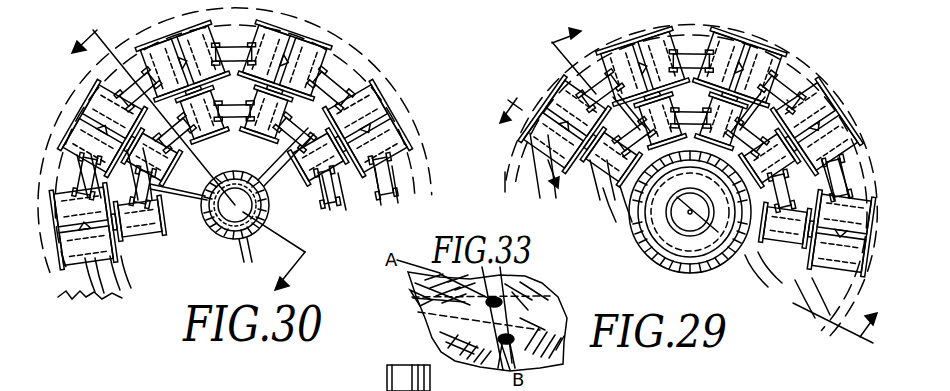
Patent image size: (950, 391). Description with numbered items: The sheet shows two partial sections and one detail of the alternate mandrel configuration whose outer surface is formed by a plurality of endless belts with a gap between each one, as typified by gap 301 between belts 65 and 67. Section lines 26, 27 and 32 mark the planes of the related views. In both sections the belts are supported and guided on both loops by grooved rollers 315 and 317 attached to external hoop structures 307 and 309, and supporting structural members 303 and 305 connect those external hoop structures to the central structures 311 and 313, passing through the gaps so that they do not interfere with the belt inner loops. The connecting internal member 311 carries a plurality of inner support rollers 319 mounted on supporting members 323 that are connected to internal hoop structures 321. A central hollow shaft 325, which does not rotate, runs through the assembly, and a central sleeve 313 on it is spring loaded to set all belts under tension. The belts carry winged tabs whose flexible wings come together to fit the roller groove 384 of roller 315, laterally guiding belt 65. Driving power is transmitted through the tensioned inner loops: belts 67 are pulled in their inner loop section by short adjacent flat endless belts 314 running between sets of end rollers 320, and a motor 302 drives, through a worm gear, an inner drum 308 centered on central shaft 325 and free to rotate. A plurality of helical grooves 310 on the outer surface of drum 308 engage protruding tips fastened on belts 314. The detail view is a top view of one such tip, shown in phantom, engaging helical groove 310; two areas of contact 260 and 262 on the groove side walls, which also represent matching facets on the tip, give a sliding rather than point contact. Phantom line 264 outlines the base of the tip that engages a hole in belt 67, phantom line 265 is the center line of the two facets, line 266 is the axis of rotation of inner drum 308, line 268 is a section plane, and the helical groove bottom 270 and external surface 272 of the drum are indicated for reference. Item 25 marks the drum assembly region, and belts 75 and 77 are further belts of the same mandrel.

In FIG. 30, the drum assembly 25 is at (78, 86).
In FIG. 29, the section line 26— 26 is at (722, 178).
In FIG. 30, the section line 27— 27 is at (201, 150).
In FIG. 29, the section line 32— 32 is at (529, 155).
In FIG. 29, the belt 65 is at (757, 92).
In FIG. 29, the belt 67 is at (817, 123).
In FIG. 29, the segment 75 is at (696, 86).
In FIG. 29, the segment 77 is at (842, 127).
In FIG. 33, the area of contact 260 is at (440, 327).
In FIG. 33, the area of contact 262 is at (500, 363).
In FIG. 33, the phantom line 264 is at (440, 342).
In FIG. 33, the phantom line 265 is at (548, 313).
In FIG. 33, the line 266 is at (503, 285).
In FIG. 33, the line 268 is at (410, 297).
In FIG. 33, the helical groove bottom 270 is at (537, 297).
In FIG. 33, the external surface 272 is at (420, 293).
In FIG. 29, the gap 301 is at (787, 100).
In FIG. 33, the motor 302 is at (387, 383).
In FIG. 30, the supporting structural member 303 is at (359, 136).
In FIG. 29, the supporting structural member 305 is at (850, 178).
In FIG. 29, the external hoop structure 307 is at (578, 130).
In FIG. 29, the inner drum 308 is at (653, 267).
In FIG. 30, the external hoop structure 309 is at (268, 85).
In FIG. 29, the helical groove 310 is at (637, 247).
In FIG. 33, the helical groove 310 is at (440, 327).
In FIG. 30, the central structure 311 is at (272, 168).
In FIG. 30, the central sleeve 313 is at (260, 218).
In FIG. 29, the flat endless belt 314 is at (760, 263).
In FIG. 30, the grooved roller 315 is at (90, 241).
In FIG. 29, the grooved roller 315 is at (853, 263).
In FIG. 30, the grooved roller 317 is at (397, 200).
In FIG. 30, the inner support roller 319 is at (135, 171).
In FIG. 29, the end roller 320 is at (822, 141).
In FIG. 30, the internal hoop structure 321 is at (348, 193).
In FIG. 29, the internal hoop structure 321 is at (608, 205).
In FIG. 30, the supporting member 323 is at (157, 245).
In FIG. 29, the central hollow shaft 325 is at (690, 235).
In FIG. 29, the roller groove 384 is at (839, 229).